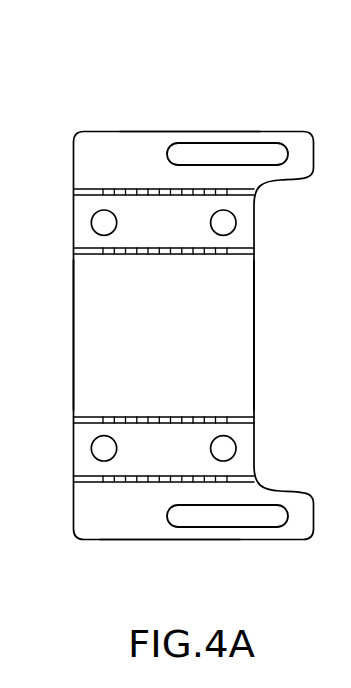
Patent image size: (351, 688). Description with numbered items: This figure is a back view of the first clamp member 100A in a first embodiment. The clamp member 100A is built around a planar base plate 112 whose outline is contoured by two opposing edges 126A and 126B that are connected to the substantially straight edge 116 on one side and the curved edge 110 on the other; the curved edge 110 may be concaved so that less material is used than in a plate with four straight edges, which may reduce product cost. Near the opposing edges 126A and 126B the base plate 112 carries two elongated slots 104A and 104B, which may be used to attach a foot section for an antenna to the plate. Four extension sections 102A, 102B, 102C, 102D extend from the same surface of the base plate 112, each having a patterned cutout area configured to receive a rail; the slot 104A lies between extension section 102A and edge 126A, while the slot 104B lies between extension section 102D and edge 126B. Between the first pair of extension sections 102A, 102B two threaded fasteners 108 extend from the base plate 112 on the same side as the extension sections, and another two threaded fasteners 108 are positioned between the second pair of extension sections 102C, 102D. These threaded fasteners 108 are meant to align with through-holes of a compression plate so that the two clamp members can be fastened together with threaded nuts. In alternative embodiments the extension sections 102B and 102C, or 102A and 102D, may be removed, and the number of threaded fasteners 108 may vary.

The first clamp member 100A is at (95, 72).
The extension section 102A is at (255, 480).
The extension section 102B is at (254, 418).
The extension section 102C is at (243, 255).
The extension section 102D is at (258, 198).
The elongated slot 104A is at (217, 522).
The elongated slot 104B is at (248, 153).
The threaded fastener 108 is at (95, 457).
The curved edge 110 is at (255, 313).
The planar base plate 112 is at (245, 347).
The substantially straight edge 116 is at (73, 306).
The opposing edge 126A is at (142, 541).
The opposing edge 126B is at (192, 131).